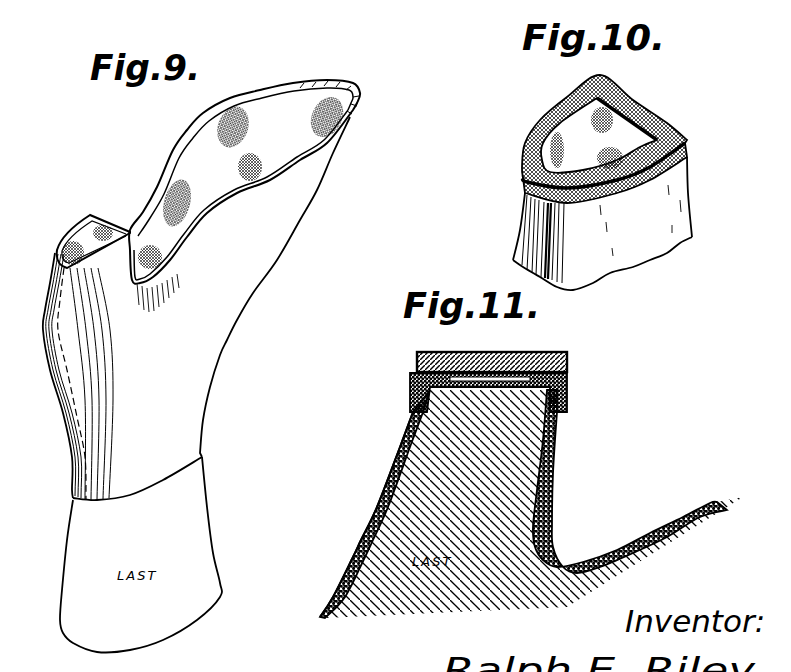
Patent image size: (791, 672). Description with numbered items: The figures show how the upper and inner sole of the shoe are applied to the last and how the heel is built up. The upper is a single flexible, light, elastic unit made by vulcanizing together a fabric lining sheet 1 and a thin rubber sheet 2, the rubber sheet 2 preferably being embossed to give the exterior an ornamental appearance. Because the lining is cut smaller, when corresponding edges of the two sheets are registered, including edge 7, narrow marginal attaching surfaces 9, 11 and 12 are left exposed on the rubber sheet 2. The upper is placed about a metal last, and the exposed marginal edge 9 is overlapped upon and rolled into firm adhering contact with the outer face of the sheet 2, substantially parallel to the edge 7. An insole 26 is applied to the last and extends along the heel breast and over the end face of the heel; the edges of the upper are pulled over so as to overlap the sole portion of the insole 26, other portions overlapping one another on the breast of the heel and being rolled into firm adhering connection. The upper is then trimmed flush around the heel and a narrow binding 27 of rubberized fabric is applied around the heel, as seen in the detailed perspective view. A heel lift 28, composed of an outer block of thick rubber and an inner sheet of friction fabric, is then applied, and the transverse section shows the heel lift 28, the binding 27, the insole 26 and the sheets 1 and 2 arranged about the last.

In FIG. 11, the lining sheet 1 is at (343, 565).
In FIG. 9, the rubber sheet 2 is at (213, 310).
In FIG. 10, the rubber sheet 2 is at (657, 213).
In FIG. 11, the rubber sheet 2 is at (378, 492).
In FIG. 9, the edge 7 is at (50, 358).
In FIG. 10, the edge 7 is at (532, 227).
In FIG. 9, the marginal attaching surface 9 is at (70, 427).
In FIG. 9, the marginal attaching surface 11 is at (180, 142).
In FIG. 9, the marginal attaching surface 12 is at (290, 163).
In FIG. 9, the insole 26 is at (274, 115).
In FIG. 10, the insole 26 is at (627, 140).
In FIG. 11, the insole 26 is at (470, 383).
In FIG. 10, the binding 27 is at (540, 113).
In FIG. 11, the binding 27 is at (567, 393).
In FIG. 11, the heel lift 28 is at (567, 360).